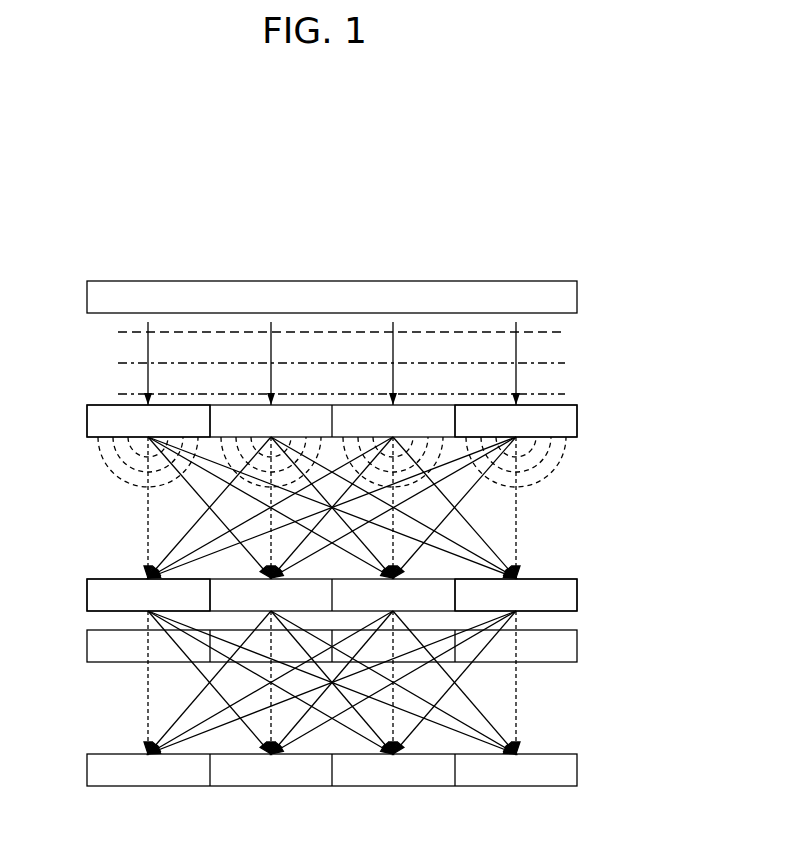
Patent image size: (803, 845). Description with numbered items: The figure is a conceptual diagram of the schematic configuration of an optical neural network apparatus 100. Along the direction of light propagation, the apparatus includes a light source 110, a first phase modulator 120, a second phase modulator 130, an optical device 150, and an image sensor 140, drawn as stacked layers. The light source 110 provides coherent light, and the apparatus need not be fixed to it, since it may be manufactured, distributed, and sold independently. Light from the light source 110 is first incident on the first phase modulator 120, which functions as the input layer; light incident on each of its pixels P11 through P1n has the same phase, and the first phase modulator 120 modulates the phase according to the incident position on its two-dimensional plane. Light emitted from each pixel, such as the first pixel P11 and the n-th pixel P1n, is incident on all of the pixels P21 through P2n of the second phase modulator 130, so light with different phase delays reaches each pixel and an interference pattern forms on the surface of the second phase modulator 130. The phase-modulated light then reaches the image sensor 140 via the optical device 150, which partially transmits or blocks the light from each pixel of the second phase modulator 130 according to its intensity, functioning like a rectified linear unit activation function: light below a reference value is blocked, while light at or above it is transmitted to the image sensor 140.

The optical neural network apparatus 100 is at (643, 230).
The light source 110 is at (567, 298).
The first phase modulator 120 is at (340, 435).
The 1-1 pixel P11 is at (97, 422).
The 1-n pixel P1n is at (568, 432).
The second phase modulator 130 is at (340, 605).
The pixel of the second phase modulator P21 is at (97, 596).
The pixel of the second phase modulator P2n is at (565, 605).
The optical device 150 is at (577, 646).
The image sensor 140 is at (577, 771).